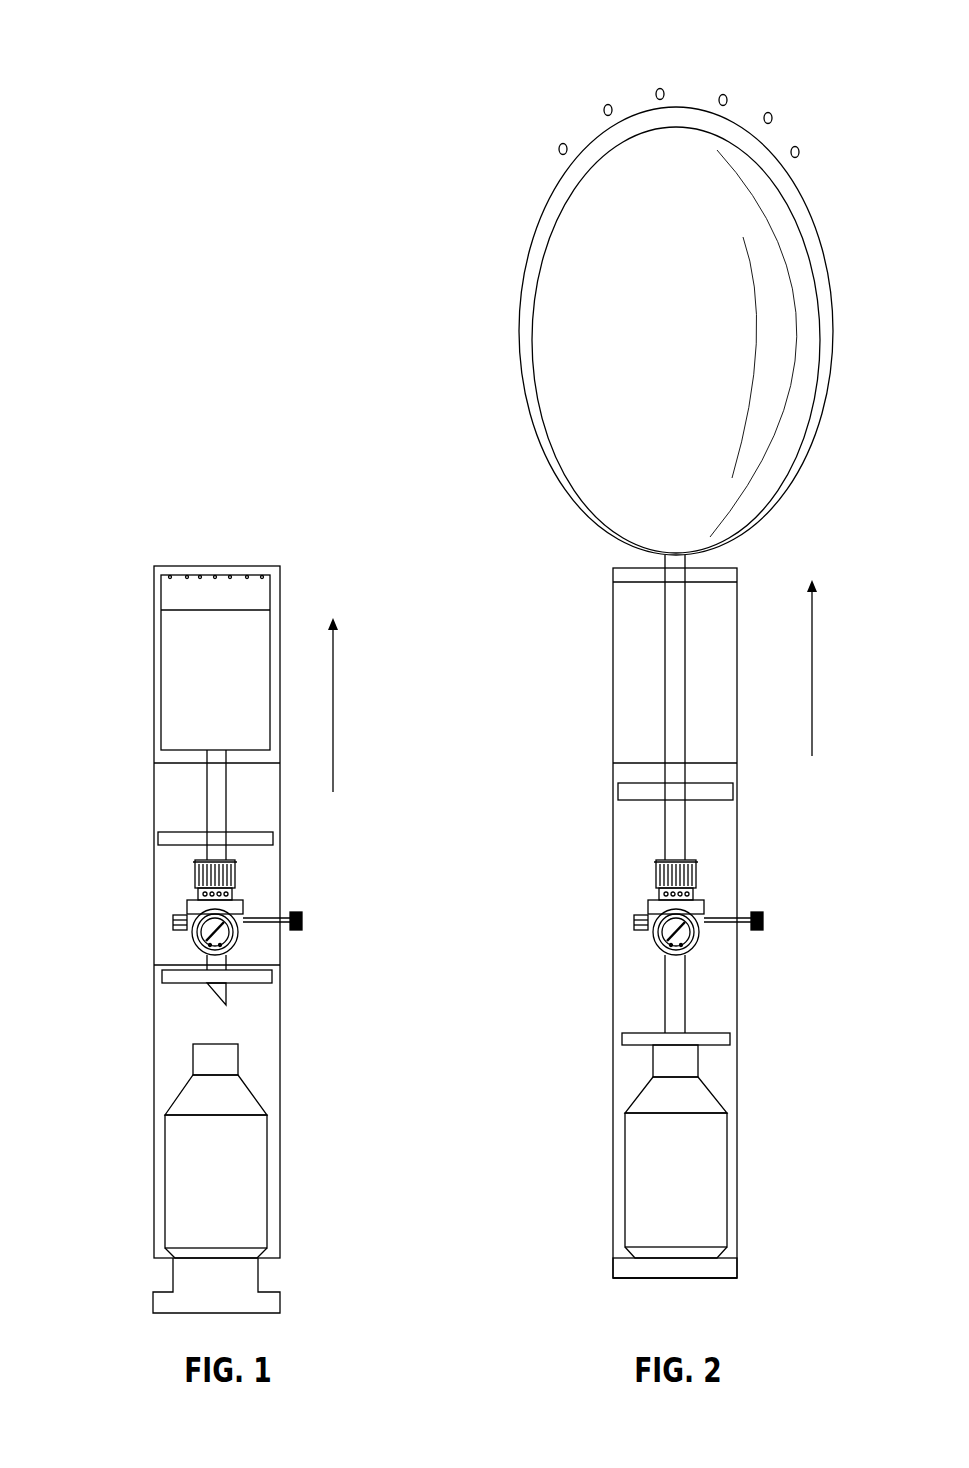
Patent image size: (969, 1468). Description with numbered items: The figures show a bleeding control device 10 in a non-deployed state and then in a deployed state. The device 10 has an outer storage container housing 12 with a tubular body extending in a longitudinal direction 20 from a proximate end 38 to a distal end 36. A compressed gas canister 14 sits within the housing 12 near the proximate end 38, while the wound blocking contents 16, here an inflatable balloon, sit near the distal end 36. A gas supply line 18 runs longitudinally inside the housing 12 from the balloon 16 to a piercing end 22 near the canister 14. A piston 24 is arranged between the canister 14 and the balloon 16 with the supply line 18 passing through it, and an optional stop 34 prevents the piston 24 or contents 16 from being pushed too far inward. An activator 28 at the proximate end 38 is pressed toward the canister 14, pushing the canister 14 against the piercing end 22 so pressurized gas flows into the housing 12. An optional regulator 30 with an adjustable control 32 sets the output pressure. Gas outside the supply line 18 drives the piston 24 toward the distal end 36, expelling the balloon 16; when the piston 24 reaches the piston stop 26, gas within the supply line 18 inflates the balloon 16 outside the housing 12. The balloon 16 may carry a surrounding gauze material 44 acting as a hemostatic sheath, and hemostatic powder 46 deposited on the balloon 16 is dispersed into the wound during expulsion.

In FIG. 1, the bleeding control device 10 is at (106, 480).
In FIG. 2, the bleeding control device 10 is at (794, 564).
In FIG. 1, the outer storage container housing 12 is at (152, 870).
In FIG. 2, the outer storage container housing 12 is at (740, 972).
In FIG. 1, the compressed gas canister 14 is at (185, 1180).
In FIG. 2, the compressed gas canister 14 is at (718, 1152).
In FIG. 1, the wound blocking contents 16 is at (178, 672).
In FIG. 2, the wound blocking contents 16 is at (762, 460).
In FIG. 1, the gas supply line 18 is at (215, 807).
In FIG. 2, the gas supply line 18 is at (688, 812).
In FIG. 1, the longitudinal direction 20 is at (333, 722).
In FIG. 2, the longitudinal direction 20 is at (815, 672).
In FIG. 1, the piercing end 22 is at (207, 990).
In FIG. 1, the piston 24 is at (275, 838).
In FIG. 2, the piston 24 is at (720, 790).
In FIG. 1, the piston stop 26 is at (262, 765).
In FIG. 2, the piston stop 26 is at (740, 757).
In FIG. 1, the activator 28 is at (163, 1300).
In FIG. 2, the activator 28 is at (725, 1270).
In FIG. 1, the regulator 30 is at (190, 907).
In FIG. 2, the regulator 30 is at (648, 905).
In FIG. 1, the adjustable control 32 is at (297, 915).
In FIG. 2, the adjustable control 32 is at (758, 928).
In FIG. 1, the stop 34 is at (270, 978).
In FIG. 2, the stop 34 is at (730, 1042).
In FIG. 2, the distal end 36 is at (619, 558).
In FIG. 2, the proximate end 38 is at (627, 1297).
In FIG. 2, the gauze material 44 is at (785, 185).
In FIG. 1, the hemostatic powder 46 is at (168, 560).
In FIG. 2, the hemostatic powder 46 is at (657, 82).